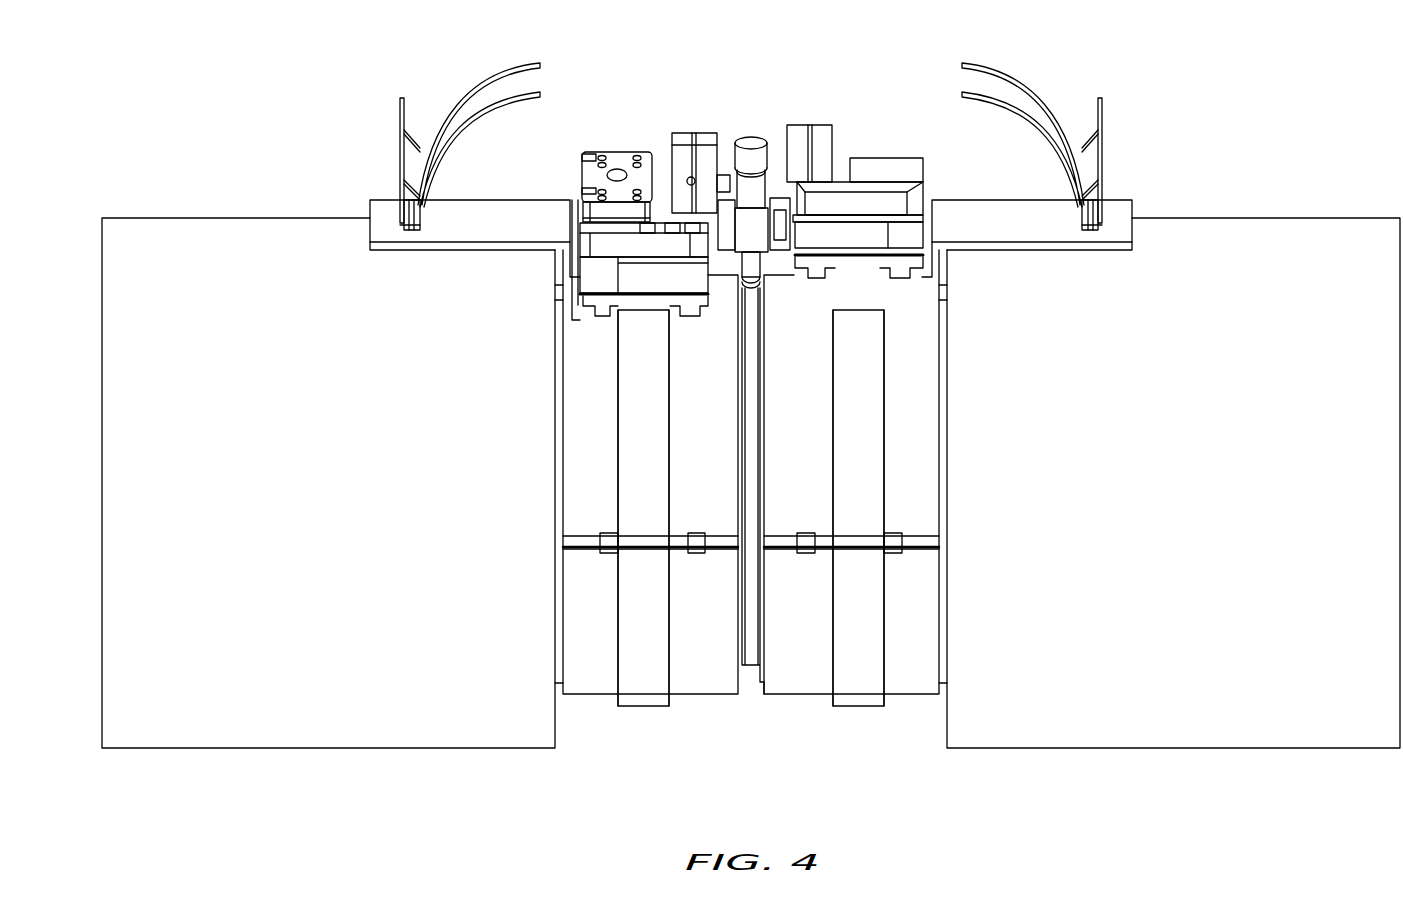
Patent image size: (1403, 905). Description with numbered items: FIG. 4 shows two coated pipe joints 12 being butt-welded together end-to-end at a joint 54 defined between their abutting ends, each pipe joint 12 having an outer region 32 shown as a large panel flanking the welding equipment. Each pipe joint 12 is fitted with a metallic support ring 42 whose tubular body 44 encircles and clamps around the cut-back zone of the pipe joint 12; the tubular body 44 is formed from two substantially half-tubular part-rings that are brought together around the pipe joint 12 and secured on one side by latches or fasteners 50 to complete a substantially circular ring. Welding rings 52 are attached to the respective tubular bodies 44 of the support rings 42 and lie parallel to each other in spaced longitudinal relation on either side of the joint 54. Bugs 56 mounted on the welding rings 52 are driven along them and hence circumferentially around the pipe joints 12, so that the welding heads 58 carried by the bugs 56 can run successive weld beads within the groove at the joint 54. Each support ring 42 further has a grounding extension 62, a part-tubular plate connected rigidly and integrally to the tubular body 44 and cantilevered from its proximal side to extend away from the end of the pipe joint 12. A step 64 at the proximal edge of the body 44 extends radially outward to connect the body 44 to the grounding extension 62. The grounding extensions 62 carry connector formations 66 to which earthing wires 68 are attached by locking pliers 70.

The pipe joint 12 is at (180, 190).
The panel 32 is at (143, 748).
The support ring 42 is at (643, 745).
The tubular body 44 is at (572, 372).
The latch 50 is at (697, 555).
The welding ring 52 is at (630, 445).
The joint 54 is at (752, 400).
The bug 56 is at (622, 160).
The welding head 58 is at (750, 140).
The grounding extension 62 is at (515, 210).
The step 64 is at (560, 297).
The connector formation 66 is at (407, 232).
The earthing wire 68 is at (473, 84).
The locking pliers 70 is at (400, 118).